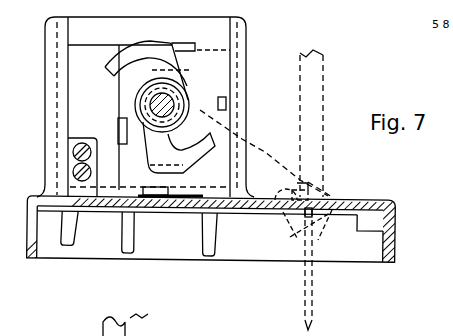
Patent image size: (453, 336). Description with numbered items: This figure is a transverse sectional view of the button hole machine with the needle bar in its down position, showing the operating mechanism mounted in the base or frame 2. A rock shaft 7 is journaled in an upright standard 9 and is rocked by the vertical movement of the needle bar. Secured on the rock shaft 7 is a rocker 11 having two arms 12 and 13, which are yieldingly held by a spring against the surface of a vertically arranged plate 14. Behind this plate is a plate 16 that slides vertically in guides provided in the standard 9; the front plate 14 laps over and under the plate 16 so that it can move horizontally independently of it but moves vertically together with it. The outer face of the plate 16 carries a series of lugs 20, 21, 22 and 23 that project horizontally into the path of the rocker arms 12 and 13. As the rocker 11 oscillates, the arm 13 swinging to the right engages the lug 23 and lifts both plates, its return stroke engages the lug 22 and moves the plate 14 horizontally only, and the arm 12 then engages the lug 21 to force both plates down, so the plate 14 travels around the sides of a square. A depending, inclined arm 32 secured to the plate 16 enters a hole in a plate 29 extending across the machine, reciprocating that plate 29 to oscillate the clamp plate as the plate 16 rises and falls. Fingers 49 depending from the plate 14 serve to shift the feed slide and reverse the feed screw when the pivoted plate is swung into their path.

The base or frame 2 is at (226, 228).
The rock shaft 7 is at (173, 108).
The upright standard 9 is at (240, 62).
The rocker 11 is at (140, 103).
The rocker arm 12 is at (113, 66).
The rocker arm 13 is at (221, 143).
The vertically arranged plate 14 is at (215, 56).
The vertically slidable plate 16 is at (80, 53).
The lug 20 is at (182, 47).
The lug 21 is at (121, 133).
The lug 22 is at (157, 219).
The lug 23 is at (224, 106).
The plate 29 is at (242, 221).
The depending inclined arm 32 is at (80, 231).
The fingers 49 is at (213, 246).